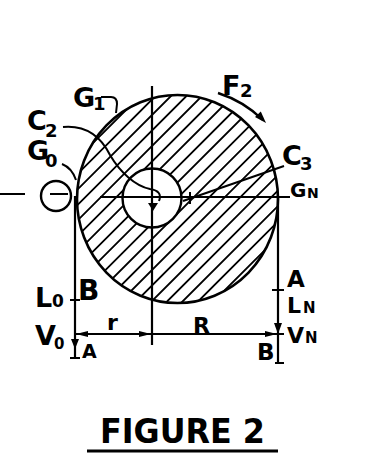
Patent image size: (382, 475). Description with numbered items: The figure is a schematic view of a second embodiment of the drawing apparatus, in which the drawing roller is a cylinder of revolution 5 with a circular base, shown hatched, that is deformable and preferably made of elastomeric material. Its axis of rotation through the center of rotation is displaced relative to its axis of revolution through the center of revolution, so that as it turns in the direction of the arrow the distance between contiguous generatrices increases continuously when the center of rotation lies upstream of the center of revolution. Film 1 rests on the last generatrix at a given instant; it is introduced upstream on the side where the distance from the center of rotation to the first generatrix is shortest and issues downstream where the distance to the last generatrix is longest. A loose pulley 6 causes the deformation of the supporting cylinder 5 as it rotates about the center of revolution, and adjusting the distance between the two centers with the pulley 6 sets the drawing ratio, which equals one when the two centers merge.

The film 1 is at (75, 277).
The cylinder of revolution 5 is at (103, 244).
The loose pulley 6 is at (53, 207).